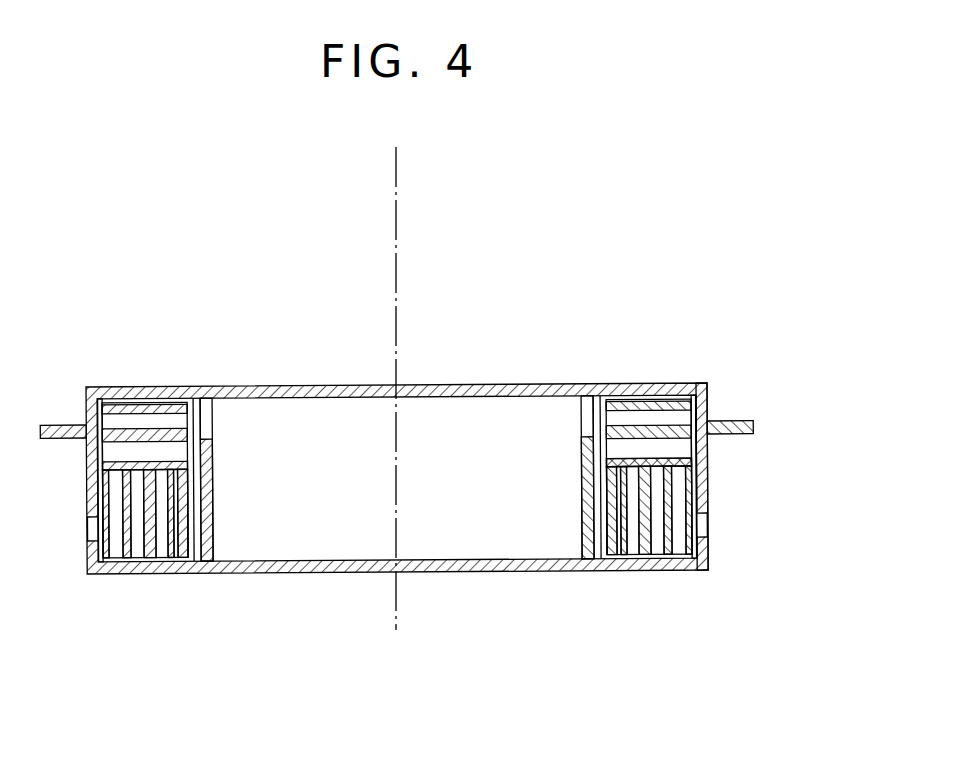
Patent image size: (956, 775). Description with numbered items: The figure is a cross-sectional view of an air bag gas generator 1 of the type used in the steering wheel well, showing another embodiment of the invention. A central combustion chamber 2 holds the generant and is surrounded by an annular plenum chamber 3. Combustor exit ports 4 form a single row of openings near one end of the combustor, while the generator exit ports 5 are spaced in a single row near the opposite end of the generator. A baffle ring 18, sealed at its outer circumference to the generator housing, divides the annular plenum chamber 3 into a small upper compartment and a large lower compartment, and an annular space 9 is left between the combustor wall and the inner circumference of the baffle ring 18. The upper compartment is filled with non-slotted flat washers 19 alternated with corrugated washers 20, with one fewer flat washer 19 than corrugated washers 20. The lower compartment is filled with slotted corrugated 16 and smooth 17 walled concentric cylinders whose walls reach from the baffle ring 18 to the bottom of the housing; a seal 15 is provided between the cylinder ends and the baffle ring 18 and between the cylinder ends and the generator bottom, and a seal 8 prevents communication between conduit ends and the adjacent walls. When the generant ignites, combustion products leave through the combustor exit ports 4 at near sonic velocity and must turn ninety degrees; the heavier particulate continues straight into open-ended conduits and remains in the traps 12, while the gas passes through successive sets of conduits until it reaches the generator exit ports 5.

The gas generator 1 is at (333, 387).
The combustion chamber 2 is at (372, 430).
The annular plenum chamber 3 is at (633, 400).
The combustor exit ports 4 is at (605, 422).
The generator exit ports 5 is at (705, 527).
The seal 8 is at (693, 397).
The annular space 9 is at (197, 403).
The traps 12 is at (116, 560).
The seal 15 is at (705, 475).
The slotted corrugated walled concentric cylinders 16 is at (176, 472).
The smooth walled concentric cylinders 17 is at (668, 557).
The baffle ring 18 is at (703, 457).
The flat washers 19 is at (131, 435).
The corrugated washers 20 is at (163, 433).